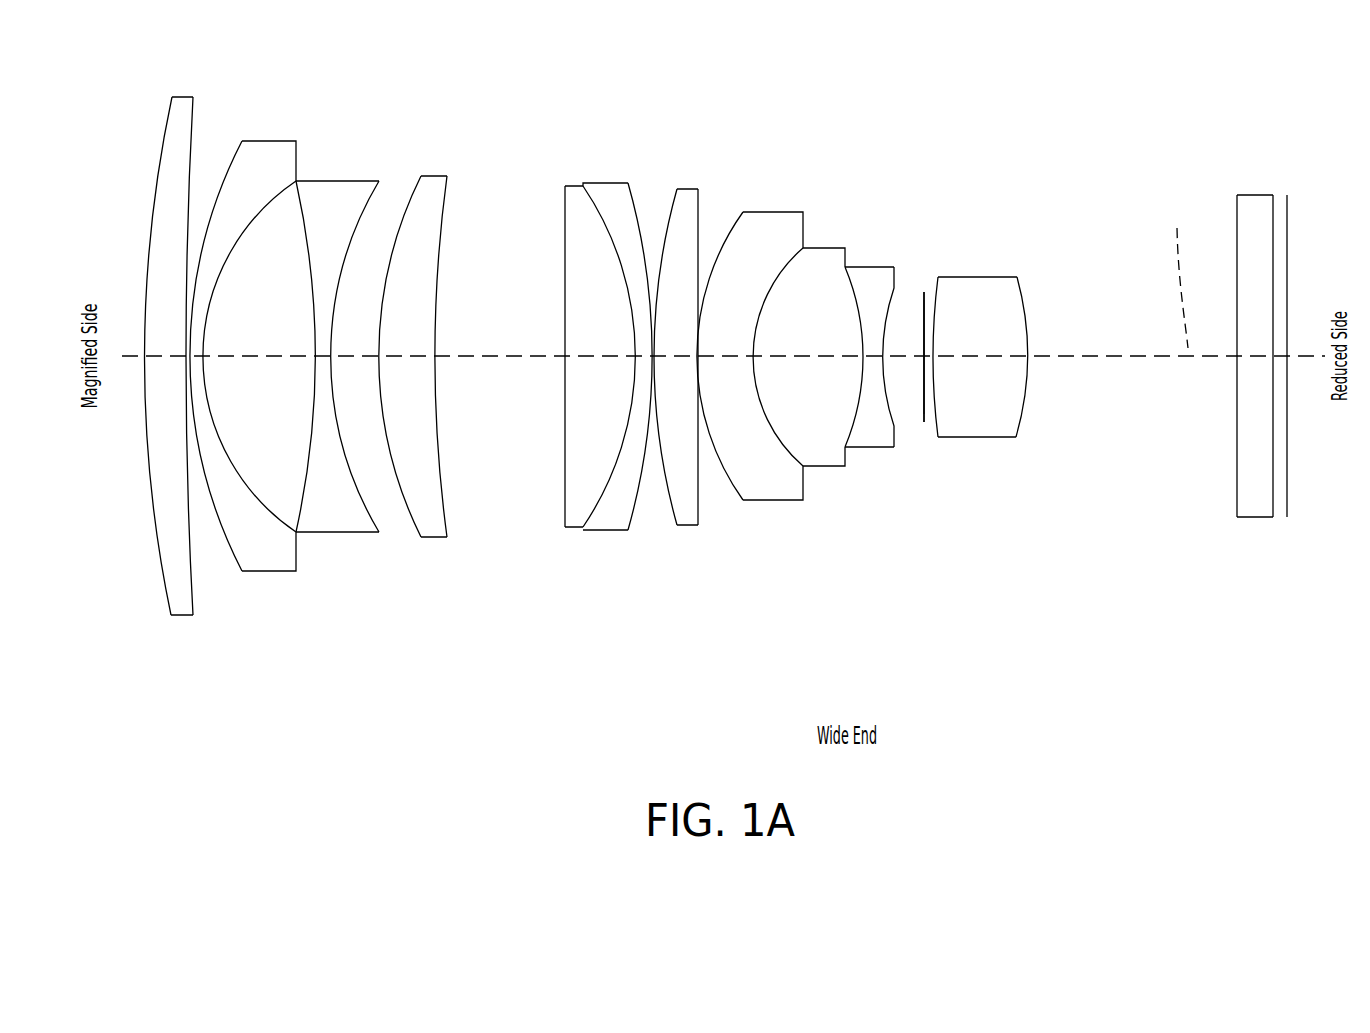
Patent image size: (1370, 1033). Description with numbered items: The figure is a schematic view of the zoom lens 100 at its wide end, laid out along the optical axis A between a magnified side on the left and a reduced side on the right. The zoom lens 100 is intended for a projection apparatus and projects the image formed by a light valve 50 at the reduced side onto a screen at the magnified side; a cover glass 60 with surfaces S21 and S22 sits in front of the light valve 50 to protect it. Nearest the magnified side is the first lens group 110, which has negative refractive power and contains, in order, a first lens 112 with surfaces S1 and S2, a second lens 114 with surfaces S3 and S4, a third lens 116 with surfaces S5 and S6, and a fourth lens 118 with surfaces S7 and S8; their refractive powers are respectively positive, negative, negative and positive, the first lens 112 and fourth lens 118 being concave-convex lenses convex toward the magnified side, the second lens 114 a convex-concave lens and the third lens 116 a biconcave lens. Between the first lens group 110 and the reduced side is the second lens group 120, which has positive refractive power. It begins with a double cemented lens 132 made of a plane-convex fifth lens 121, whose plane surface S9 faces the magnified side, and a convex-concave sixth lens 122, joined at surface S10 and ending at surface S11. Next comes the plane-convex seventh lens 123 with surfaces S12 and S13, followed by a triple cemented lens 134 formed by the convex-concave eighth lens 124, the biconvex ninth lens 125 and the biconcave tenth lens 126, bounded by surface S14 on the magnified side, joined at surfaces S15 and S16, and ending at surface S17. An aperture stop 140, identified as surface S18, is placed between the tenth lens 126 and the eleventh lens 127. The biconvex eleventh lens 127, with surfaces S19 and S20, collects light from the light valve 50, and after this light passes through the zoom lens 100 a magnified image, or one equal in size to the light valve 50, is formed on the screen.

The zoom lens 100 is at (1340, 664).
The first lens group 110 is at (127, 652).
The first lens 112 is at (175, 343).
The second lens 114 is at (243, 369).
The third lens 116 is at (338, 369).
The fourth lens 118 is at (420, 369).
The second lens group 120 is at (582, 652).
The fifth lens 121 is at (589, 343).
The sixth lens 122 is at (631, 343).
The seventh lens 123 is at (720, 369).
The eighth lens 124 is at (791, 343).
The ninth lens 125 is at (857, 343).
The tenth lens 126 is at (913, 343).
The eleventh lens 127 is at (1021, 424).
The double cemented lens 132 is at (558, 597).
The triple cemented lens 134 is at (865, 598).
The aperture stop 140 is at (969, 309).
The cover glass 60 is at (1239, 359).
The light valve 50 is at (1289, 470).
The optical axis A is at (1178, 272).
The surface S1 is at (164, 134).
The surface S2 is at (195, 121).
The surface S3 is at (219, 177).
The surface S4 is at (272, 196).
The surface S5 is at (309, 214).
The surface S6 is at (346, 243).
The surface S7 is at (401, 216).
The surface S8 is at (432, 250).
The surface S9 is at (562, 222).
The surface S10 is at (602, 214).
The surface S11 is at (638, 214).
The surface S12 is at (666, 262).
The surface S13 is at (702, 218).
The surface S14 is at (732, 242).
The surface S15 is at (770, 294).
The surface S16 is at (861, 289).
The surface S17 is at (881, 317).
The surface S18 is at (921, 331).
The surface S19 is at (938, 324).
The surface S20 is at (1031, 321).
The surface S21 is at (1236, 208).
The surface S22 is at (1271, 258).